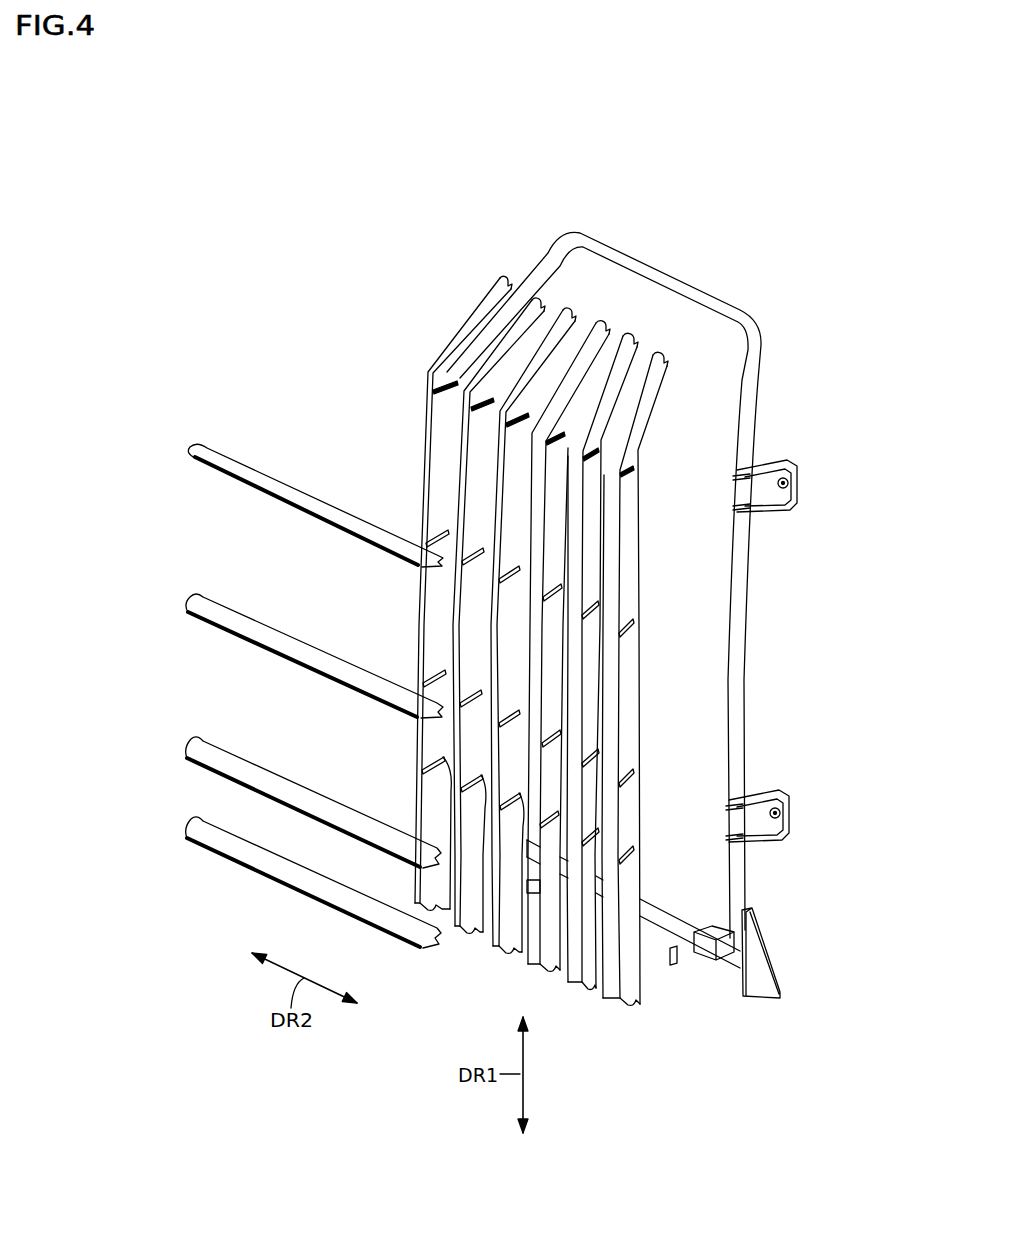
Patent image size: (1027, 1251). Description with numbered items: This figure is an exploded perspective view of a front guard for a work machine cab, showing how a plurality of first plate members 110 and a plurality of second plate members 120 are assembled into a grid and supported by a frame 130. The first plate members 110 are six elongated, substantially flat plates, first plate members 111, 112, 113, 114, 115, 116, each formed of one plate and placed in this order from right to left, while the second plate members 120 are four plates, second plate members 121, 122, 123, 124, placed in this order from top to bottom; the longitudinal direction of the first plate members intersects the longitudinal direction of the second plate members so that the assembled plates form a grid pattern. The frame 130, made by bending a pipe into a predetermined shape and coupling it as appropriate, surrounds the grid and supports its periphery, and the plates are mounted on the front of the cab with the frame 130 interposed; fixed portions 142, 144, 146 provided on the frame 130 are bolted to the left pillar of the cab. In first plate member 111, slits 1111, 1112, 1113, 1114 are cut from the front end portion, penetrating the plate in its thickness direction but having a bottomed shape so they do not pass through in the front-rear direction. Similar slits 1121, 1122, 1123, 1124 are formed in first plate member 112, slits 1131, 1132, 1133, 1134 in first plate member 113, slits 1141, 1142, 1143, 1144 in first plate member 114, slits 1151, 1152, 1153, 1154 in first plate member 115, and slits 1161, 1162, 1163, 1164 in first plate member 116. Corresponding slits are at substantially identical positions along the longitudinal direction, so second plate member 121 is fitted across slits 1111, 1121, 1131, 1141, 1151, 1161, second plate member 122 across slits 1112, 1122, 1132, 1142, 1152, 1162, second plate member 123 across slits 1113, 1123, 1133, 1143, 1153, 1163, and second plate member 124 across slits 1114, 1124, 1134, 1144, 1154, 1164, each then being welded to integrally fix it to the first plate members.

The first plate members 110 is at (736, 184).
The first plate member 111 is at (496, 298).
The first plate member 112 is at (540, 297).
The first plate member 113 is at (566, 308).
The first plate member 114 is at (598, 322).
The first plate member 115 is at (630, 338).
The first plate member 116 is at (665, 363).
The slit 1111 is at (431, 389).
The slit 1112 is at (446, 531).
The slit 1113 is at (444, 671).
The slit 1114 is at (445, 907).
The slit 1121 is at (469, 406).
The slit 1122 is at (482, 549).
The slit 1123 is at (480, 691).
The slit 1124 is at (478, 928).
The slit 1131 is at (506, 421).
The slit 1132 is at (518, 567).
The slit 1133 is at (518, 711).
The slit 1134 is at (515, 948).
The slit 1141 is at (546, 439).
The slit 1142 is at (560, 585).
The slit 1143 is at (559, 731).
The slit 1144 is at (557, 966).
The slit 1151 is at (583, 455).
The slit 1152 is at (597, 602).
The slit 1153 is at (597, 750).
The slit 1154 is at (598, 984).
The slit 1161 is at (620, 471).
The slit 1162 is at (632, 620).
The slit 1163 is at (632, 770).
The slit 1164 is at (655, 870).
The second plate members 120 is at (122, 467).
The second plate member 121 is at (246, 474).
The second plate member 122 is at (233, 612).
The second plate member 123 is at (232, 768).
The second plate member 124 is at (232, 848).
The frame 130 is at (725, 306).
The fixed portion 142 is at (770, 465).
The fixed portion 144 is at (773, 793).
The fixed portion 146 is at (773, 981).